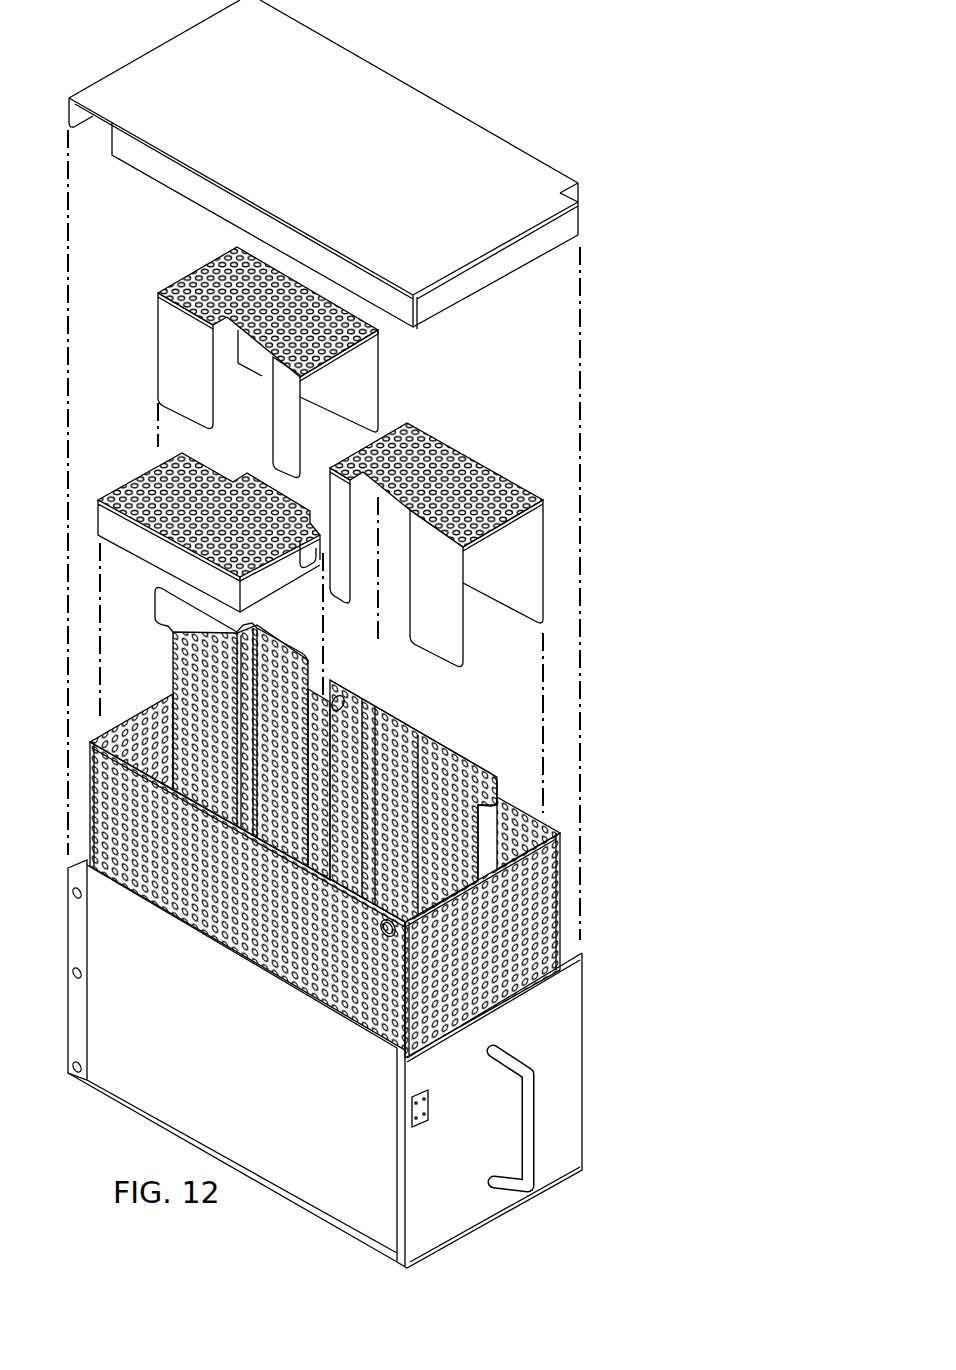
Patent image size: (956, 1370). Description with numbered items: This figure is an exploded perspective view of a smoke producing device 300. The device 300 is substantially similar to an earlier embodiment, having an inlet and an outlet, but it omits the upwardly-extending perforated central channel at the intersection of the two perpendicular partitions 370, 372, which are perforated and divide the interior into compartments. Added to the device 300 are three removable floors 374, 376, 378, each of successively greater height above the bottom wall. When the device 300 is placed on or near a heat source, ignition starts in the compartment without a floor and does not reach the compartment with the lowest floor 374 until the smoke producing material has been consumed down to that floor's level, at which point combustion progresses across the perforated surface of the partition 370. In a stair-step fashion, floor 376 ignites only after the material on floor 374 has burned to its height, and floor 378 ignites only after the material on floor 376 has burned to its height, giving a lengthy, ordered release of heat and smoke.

The smoke producing device 300 is at (603, 85).
The partition 370 is at (417, 658).
The partition 372 is at (482, 780).
The removable floor 374 is at (140, 480).
The removable floor 376 is at (160, 347).
The removable floor 378 is at (490, 473).